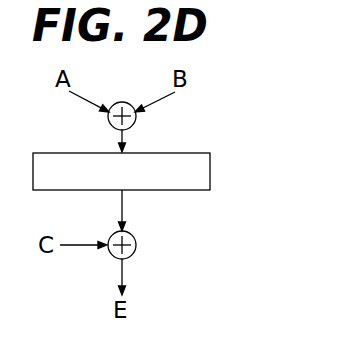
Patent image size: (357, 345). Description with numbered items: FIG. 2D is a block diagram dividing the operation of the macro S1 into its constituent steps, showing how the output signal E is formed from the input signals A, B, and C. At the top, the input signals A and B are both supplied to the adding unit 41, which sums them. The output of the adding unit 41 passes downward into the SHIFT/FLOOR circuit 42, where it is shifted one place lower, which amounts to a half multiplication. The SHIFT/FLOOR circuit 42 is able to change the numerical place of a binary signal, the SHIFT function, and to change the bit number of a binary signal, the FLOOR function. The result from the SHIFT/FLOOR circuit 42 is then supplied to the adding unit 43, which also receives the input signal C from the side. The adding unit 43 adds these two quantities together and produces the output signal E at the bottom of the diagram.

The adding unit 41 is at (135, 123).
The SHIFT/FLOOR circuit 42 is at (211, 171).
The adding unit 43 is at (136, 245).